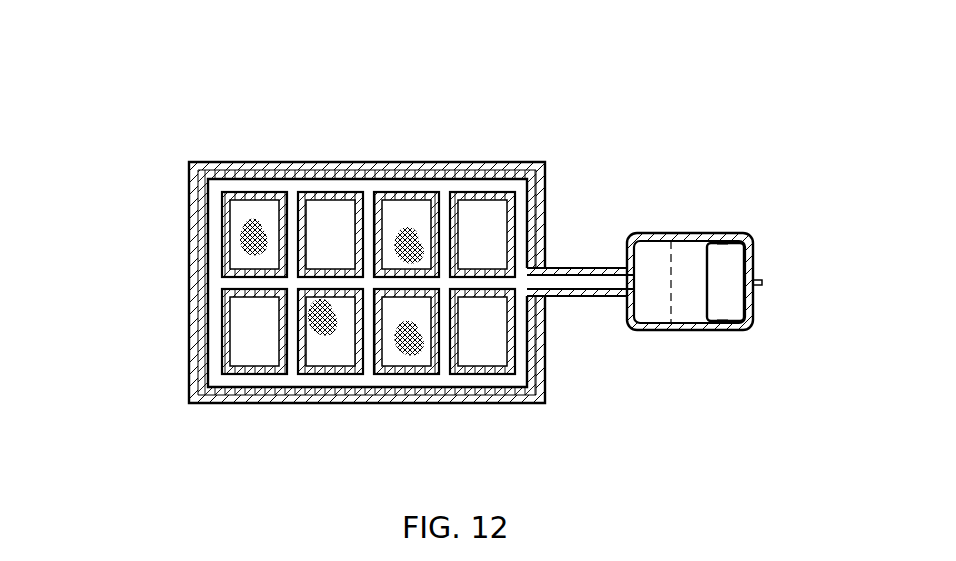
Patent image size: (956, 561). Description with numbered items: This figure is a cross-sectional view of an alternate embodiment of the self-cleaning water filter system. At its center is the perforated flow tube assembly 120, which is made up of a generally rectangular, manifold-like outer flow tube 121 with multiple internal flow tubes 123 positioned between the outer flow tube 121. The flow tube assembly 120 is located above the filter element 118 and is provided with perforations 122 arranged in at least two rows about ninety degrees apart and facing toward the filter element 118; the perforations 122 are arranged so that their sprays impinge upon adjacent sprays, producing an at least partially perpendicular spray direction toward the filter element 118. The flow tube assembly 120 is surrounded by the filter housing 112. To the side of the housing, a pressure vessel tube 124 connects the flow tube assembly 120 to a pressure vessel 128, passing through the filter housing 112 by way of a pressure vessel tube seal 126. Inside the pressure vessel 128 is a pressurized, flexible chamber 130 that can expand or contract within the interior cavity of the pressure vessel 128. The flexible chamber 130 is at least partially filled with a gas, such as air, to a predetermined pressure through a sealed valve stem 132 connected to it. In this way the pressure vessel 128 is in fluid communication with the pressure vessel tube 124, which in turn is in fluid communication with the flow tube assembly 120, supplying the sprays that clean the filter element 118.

The filter housing 112 is at (189, 190).
The filter element 118 is at (243, 243).
The perforated flow tube assembly 120 is at (510, 169).
The outer flow tube 121 is at (280, 188).
The perforations 122 is at (343, 191).
The internal flow tubes 123 is at (252, 283).
The pressure vessel tube 124 is at (572, 297).
The pressure vessel tube seal 126 is at (544, 268).
The pressure vessel 128 is at (682, 233).
The flexible chamber 130 is at (706, 282).
The valve stem 132 is at (758, 283).